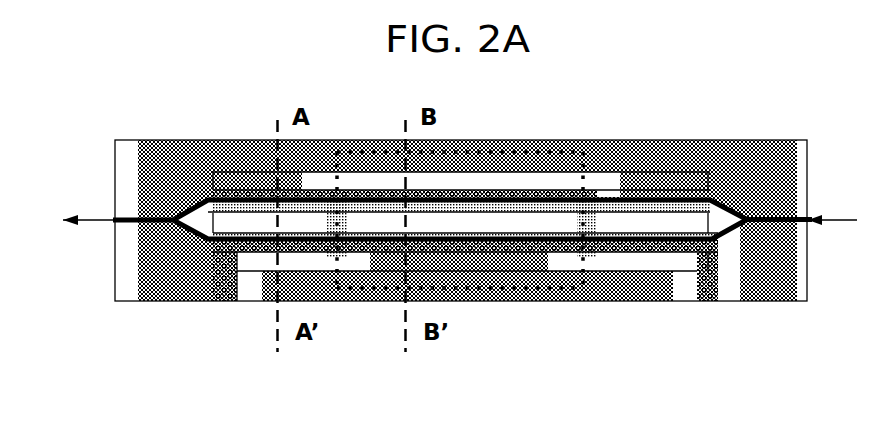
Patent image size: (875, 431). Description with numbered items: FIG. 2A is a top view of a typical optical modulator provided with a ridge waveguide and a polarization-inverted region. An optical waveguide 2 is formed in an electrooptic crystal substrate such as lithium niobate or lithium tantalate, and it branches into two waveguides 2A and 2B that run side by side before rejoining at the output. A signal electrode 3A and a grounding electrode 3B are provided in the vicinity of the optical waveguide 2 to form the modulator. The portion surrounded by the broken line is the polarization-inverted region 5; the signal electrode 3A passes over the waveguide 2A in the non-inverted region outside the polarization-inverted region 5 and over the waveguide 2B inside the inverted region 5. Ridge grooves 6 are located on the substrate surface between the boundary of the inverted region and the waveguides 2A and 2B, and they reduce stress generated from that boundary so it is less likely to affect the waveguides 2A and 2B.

The optical waveguide 2 is at (126, 224).
The waveguide 2A is at (485, 242).
The waveguide 2B is at (485, 192).
The signal electrode 3A is at (227, 288).
The grounding electrode 3B is at (760, 300).
The polarization-inverted region 5 is at (470, 299).
The ridge grooves 6 is at (213, 187).